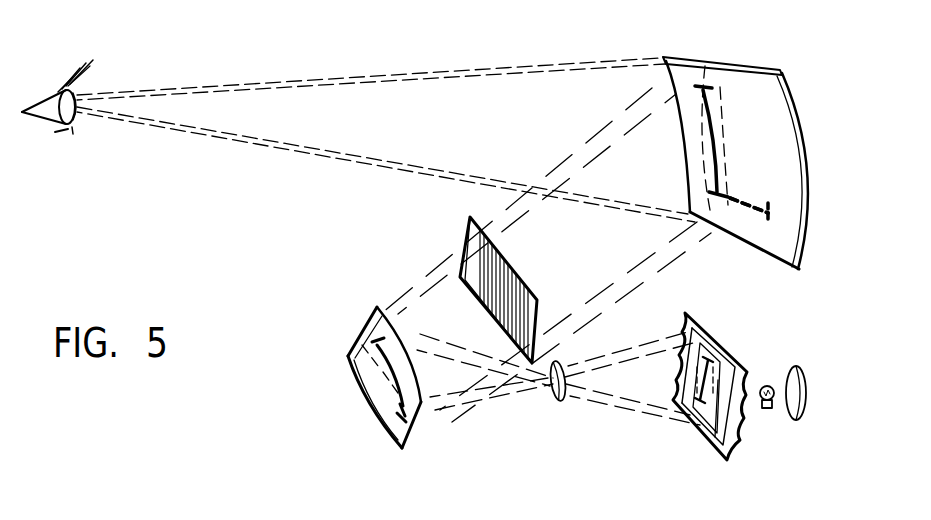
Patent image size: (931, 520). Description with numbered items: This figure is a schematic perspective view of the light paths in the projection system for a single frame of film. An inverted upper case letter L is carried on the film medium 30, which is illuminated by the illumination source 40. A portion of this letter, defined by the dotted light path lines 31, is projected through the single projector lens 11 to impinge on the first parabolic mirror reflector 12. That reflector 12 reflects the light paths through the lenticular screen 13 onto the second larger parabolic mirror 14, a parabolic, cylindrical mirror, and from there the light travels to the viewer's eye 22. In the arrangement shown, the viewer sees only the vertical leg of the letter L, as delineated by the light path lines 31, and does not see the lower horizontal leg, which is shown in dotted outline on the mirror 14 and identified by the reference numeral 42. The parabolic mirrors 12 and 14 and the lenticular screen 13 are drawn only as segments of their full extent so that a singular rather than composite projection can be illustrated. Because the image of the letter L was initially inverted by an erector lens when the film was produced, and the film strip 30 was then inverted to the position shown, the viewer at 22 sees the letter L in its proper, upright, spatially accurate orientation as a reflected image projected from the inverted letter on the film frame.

The single projector lens 11 is at (554, 402).
The first parabolic mirror reflector 12 is at (352, 394).
The lenticular screen 13 is at (468, 217).
The second larger parabolic mirror 14 is at (722, 57).
The viewer's eye 22 is at (45, 130).
The film medium 30 is at (706, 445).
The light path lines 31 is at (567, 175).
The illumination source 40 is at (793, 422).
The lower horizontal leg of the letter L 42 is at (752, 226).